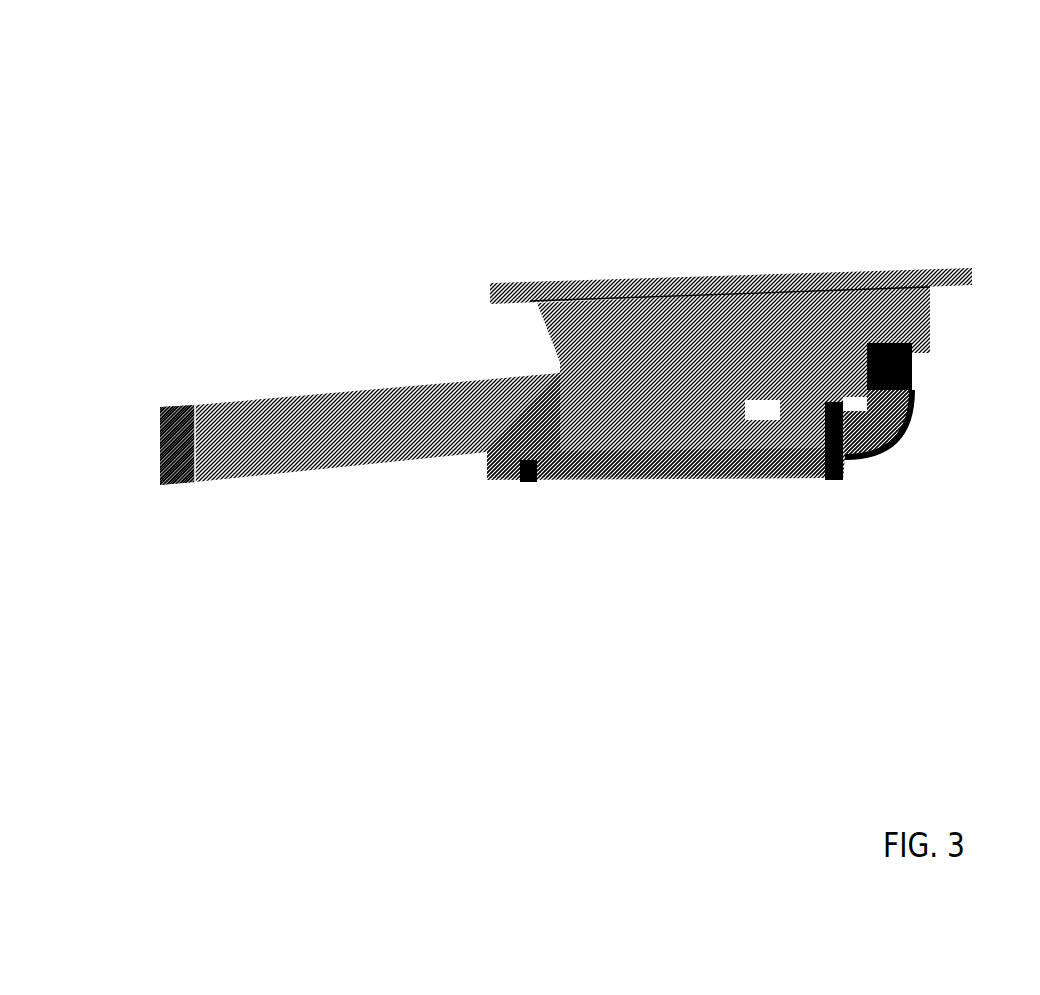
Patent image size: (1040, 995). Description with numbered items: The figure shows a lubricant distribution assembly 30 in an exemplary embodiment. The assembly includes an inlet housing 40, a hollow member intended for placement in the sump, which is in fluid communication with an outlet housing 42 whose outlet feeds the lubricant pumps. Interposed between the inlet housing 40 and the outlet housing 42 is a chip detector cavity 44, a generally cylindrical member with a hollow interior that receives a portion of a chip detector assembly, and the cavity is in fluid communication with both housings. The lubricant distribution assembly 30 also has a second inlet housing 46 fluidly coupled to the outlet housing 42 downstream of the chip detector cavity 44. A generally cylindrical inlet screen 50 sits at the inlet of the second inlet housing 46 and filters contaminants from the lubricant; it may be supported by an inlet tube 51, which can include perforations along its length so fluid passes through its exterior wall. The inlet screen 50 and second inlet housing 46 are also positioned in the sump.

The lubricant distribution assembly 30 is at (266, 172).
The inlet housing 40 is at (243, 403).
The outlet housing 42 is at (928, 310).
The chip detector cavity 44 is at (595, 282).
The second inlet housing 46 is at (857, 462).
The inlet screen 50 is at (550, 480).
The inlet tube 51 is at (660, 450).